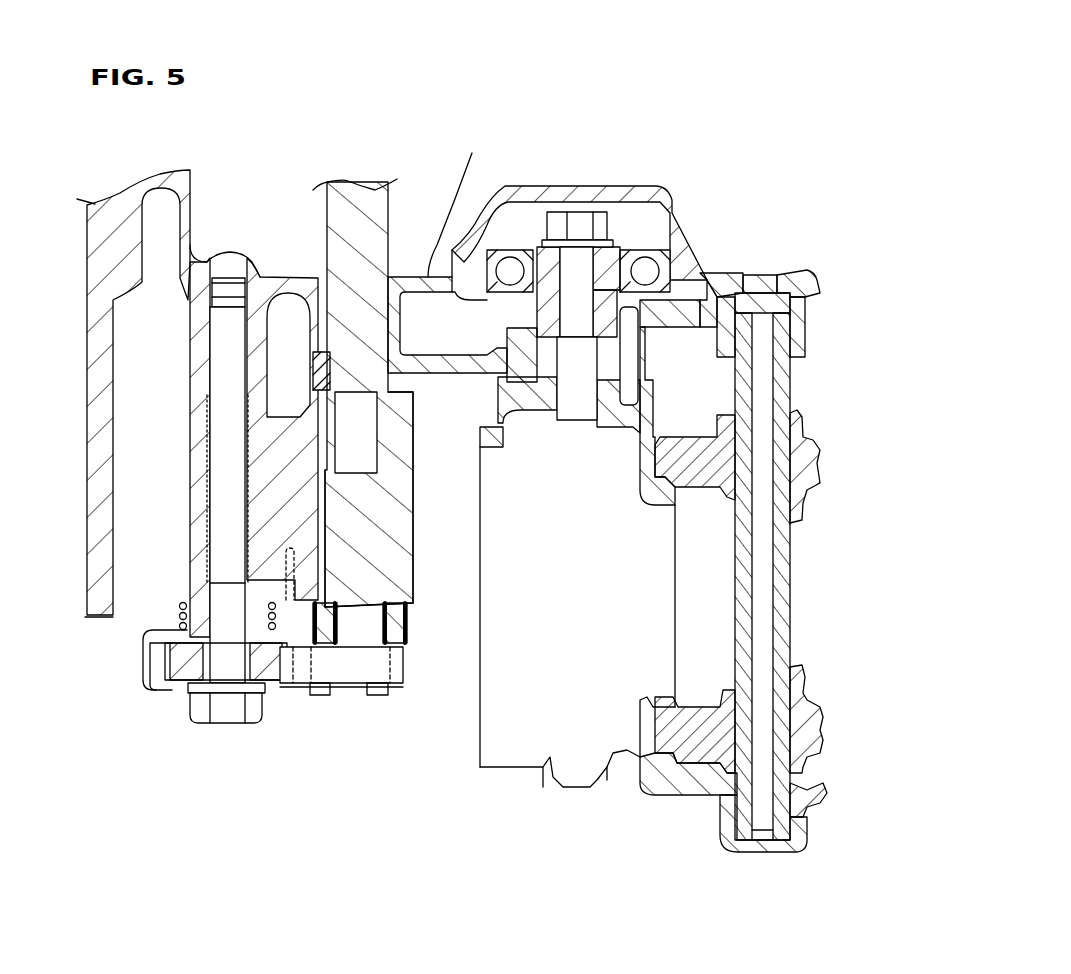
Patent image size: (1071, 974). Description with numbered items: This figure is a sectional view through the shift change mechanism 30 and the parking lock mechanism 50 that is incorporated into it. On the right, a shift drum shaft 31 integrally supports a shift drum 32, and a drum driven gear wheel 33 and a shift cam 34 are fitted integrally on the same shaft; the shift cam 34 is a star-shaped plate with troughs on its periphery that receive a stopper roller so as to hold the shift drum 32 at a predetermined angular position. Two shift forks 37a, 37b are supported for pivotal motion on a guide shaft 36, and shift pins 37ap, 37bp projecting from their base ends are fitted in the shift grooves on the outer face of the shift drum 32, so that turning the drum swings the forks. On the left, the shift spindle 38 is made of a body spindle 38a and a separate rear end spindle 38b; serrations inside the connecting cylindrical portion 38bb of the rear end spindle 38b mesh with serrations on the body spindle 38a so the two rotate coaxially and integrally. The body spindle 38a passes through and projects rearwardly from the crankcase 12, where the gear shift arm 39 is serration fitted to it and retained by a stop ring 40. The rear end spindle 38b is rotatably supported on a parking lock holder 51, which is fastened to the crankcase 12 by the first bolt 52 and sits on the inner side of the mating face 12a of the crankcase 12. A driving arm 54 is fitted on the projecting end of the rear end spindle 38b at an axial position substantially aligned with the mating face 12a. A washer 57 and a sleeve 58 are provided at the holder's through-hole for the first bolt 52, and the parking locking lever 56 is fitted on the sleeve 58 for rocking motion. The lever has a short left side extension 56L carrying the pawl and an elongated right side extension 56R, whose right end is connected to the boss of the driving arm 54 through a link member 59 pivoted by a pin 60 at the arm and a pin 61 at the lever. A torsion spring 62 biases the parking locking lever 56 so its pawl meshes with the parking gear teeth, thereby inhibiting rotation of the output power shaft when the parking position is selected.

The crankcase 12 is at (45, 428).
The mating face 12a is at (87, 617).
The shift change mechanism 30 is at (629, 539).
The shift drum shaft 31 is at (583, 277).
The shift drum 32 is at (480, 720).
The drum driven gear wheel 33 is at (508, 336).
The shift cam 34 is at (710, 277).
The guide shaft 36 is at (793, 593).
The shift fork 37a is at (813, 445).
The shift pin 37ap is at (700, 442).
The shift fork 37b is at (825, 715).
The shift pin 37bp is at (700, 710).
The shift spindle 38 is at (375, 380).
The body spindle 38a is at (327, 213).
The rear end spindle 38b is at (375, 542).
The connecting cylindrical portion 38bb is at (412, 465).
The gear shift arm 39 is at (442, 373).
The stop ring 40 is at (303, 390).
The parking lock mechanism 50 is at (266, 571).
The parking lock holder 51 is at (190, 517).
The first bolt 52 is at (220, 512).
The driving arm 54 is at (405, 630).
The parking locking lever 56 is at (242, 727).
The left side extension 56L is at (173, 690).
The right side extension 56R is at (287, 690).
The washer 57 is at (140, 652).
The sleeve 58 is at (175, 665).
The link member 59 is at (350, 693).
The pin 60 is at (323, 697).
The pin 61 is at (377, 693).
The torsion spring 62 is at (180, 607).